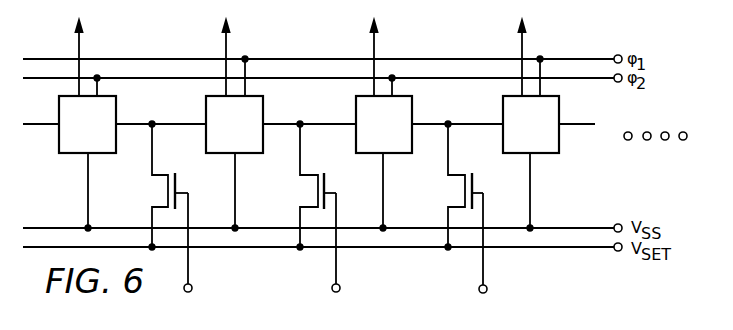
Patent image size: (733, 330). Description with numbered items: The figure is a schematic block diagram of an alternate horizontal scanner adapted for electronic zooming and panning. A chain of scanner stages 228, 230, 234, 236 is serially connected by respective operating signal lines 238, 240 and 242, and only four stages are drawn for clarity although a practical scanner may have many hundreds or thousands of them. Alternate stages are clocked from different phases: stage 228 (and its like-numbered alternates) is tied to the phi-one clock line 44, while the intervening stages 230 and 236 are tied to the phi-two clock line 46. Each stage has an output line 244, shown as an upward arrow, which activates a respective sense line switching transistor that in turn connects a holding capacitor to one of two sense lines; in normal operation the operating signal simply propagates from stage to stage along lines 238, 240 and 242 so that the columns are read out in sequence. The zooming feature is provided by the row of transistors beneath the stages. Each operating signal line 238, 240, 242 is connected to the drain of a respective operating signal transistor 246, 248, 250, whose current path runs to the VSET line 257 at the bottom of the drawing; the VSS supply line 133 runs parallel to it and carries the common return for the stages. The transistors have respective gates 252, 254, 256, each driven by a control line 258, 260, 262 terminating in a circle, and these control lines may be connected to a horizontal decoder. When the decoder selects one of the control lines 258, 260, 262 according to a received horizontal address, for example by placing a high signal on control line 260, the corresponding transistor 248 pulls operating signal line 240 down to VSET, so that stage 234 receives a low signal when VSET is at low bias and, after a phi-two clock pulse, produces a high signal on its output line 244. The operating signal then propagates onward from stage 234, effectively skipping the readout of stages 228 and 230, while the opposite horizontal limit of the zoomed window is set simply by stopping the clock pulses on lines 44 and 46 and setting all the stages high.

The phi 1 clock line 44 is at (563, 59).
The phi 2 clock line 46 is at (575, 79).
The VSS supply line 133 is at (553, 228).
The VSET line 257 is at (555, 247).
The scanner stage 228 is at (87, 153).
The scanner stage 230 is at (234, 143).
The scanner stage 234 is at (384, 153).
The scanner stage 236 is at (531, 143).
The operating signal line 238 is at (128, 123).
The operating signal line 240 is at (276, 123).
The operating signal line 242 is at (424, 123).
The output line 244 is at (78, 45).
The operating signal transistor 246 is at (150, 198).
The operating signal transistor 248 is at (298, 198).
The operating signal transistor 250 is at (446, 198).
The gate 252 is at (177, 191).
The gate 254 is at (325, 191).
The gate 256 is at (473, 191).
The control line 258 is at (188, 267).
The control line 260 is at (336, 268).
The control line 262 is at (483, 270).